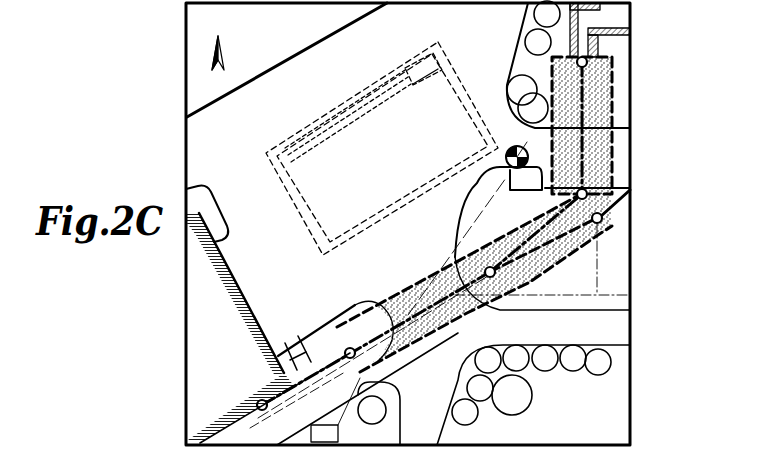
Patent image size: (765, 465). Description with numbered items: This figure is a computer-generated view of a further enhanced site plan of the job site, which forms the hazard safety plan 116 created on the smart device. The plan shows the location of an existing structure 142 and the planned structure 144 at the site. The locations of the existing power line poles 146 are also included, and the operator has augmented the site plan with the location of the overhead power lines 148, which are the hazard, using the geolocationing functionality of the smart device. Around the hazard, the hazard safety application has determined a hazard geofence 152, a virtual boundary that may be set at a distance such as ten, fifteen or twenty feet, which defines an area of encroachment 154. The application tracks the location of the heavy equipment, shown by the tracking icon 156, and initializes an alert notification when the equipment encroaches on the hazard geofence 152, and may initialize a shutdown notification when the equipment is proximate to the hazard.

The hazard safety plan 116 is at (184, 118).
The existing structure 142 is at (211, 288).
The planned structure 144 is at (352, 103).
The existing power line poles 146 is at (590, 62).
The overhead power lines 148 is at (590, 108).
The hazard geofence 152 is at (612, 147).
The area of encroachment 154 is at (603, 168).
The tracking icon 156 is at (503, 146).